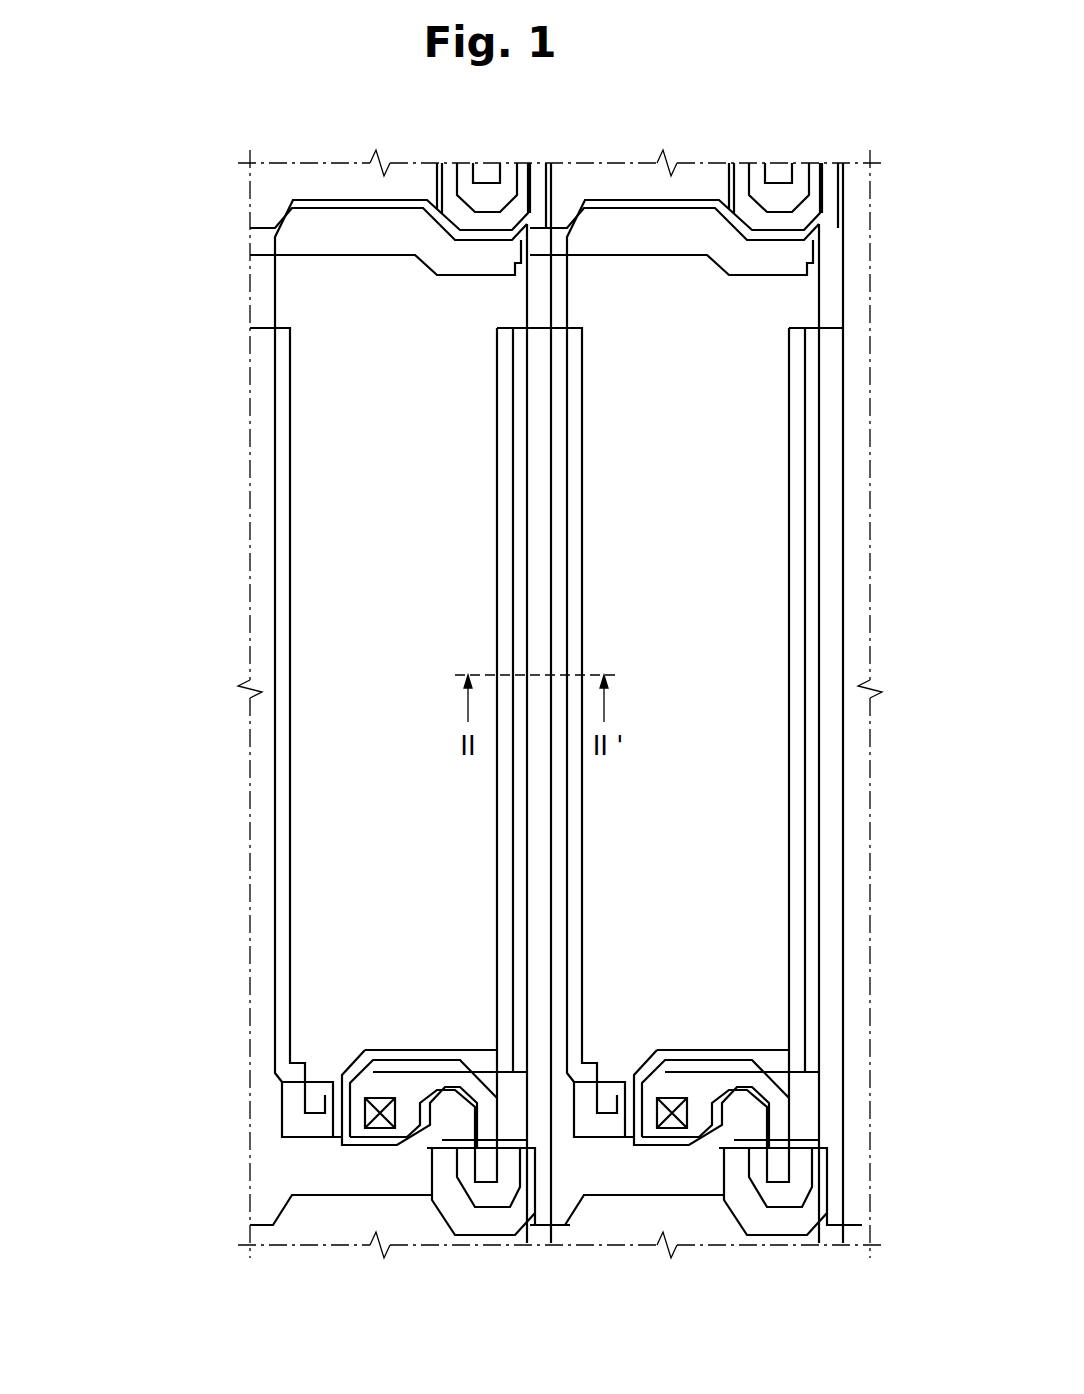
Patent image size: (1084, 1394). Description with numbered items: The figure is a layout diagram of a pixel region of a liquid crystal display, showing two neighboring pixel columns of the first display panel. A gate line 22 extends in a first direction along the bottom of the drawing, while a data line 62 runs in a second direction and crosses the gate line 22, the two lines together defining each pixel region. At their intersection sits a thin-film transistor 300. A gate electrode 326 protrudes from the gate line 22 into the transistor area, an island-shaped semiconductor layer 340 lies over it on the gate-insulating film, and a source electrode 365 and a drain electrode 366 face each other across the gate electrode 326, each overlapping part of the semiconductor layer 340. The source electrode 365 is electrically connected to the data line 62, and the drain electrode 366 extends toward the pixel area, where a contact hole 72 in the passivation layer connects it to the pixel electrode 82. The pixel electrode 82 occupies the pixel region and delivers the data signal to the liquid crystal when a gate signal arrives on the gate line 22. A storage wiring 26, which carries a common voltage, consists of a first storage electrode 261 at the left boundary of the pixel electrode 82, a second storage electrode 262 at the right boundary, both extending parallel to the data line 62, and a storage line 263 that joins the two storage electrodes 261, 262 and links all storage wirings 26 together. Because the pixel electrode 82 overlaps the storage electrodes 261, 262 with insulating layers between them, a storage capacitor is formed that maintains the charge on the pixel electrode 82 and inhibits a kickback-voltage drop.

The pixel electrode 82 is at (273, 490).
The data line 62 is at (540, 558).
The storage wiring 26 is at (317, 732).
The first storage electrode 261 is at (290, 795).
The second storage electrode 262 is at (492, 852).
The storage line 263 is at (345, 1078).
The contact hole 72 is at (378, 1118).
The gate line 22 is at (324, 1252).
The thin-film transistor 300 is at (503, 1214).
The gate electrode 326 is at (537, 1112).
The semiconductor layer 340 is at (420, 1185).
The source electrode 365 is at (455, 1183).
The drain electrode 366 is at (490, 1170).